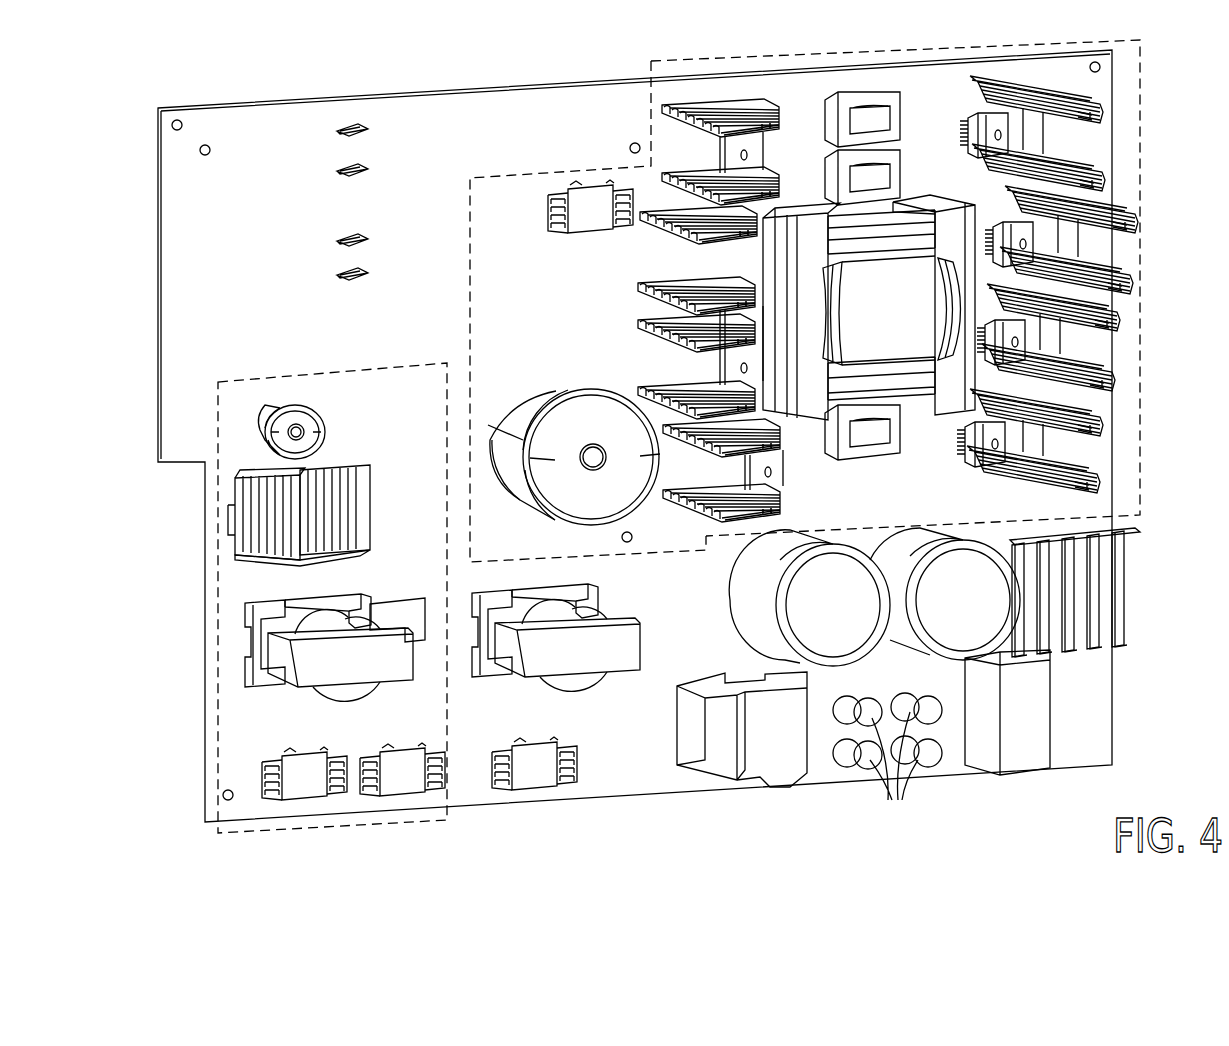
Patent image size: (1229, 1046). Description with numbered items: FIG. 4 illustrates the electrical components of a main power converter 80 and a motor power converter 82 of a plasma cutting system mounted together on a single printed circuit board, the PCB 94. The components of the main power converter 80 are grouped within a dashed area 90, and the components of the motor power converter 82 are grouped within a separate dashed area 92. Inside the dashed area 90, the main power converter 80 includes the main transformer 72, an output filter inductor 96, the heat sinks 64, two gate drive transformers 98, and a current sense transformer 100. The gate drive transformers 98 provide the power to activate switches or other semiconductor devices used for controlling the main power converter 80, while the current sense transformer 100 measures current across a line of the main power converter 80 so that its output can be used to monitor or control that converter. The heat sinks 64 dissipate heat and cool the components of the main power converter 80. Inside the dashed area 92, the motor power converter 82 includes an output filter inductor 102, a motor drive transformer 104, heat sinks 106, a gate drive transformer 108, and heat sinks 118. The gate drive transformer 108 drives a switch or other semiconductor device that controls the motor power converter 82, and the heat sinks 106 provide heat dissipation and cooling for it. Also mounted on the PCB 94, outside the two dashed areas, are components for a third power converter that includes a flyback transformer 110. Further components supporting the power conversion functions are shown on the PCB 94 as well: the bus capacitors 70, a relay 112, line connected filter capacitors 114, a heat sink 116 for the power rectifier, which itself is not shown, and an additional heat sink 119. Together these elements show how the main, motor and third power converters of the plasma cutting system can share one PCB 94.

The printed circuit board 94 is at (450, 86).
The motor power converter 82 is at (343, 341).
The dashed area 92 is at (292, 366).
The dashed area 90 is at (651, 112).
The main power converter 80 is at (548, 144).
The heat sinks 64 is at (745, 108).
The gate drive transformers 98 is at (900, 160).
The main transformer 72 is at (920, 272).
The current sense transformer 100 is at (900, 446).
The output filter inductor 96 is at (540, 380).
The output filter inductor 102 is at (320, 430).
The heat sinks 106 is at (372, 515).
The motor drive transformer 104 is at (292, 608).
The gate drive transformer 108 is at (398, 606).
The flyback transformer 110 is at (622, 665).
The relay 112 is at (715, 688).
The bus capacitors 70 is at (895, 525).
The heat sink 116 is at (1130, 545).
The line connected filter capacitors 114 is at (1052, 708).
The heat sinks 118 is at (305, 800).
The heat sink 119 is at (533, 785).